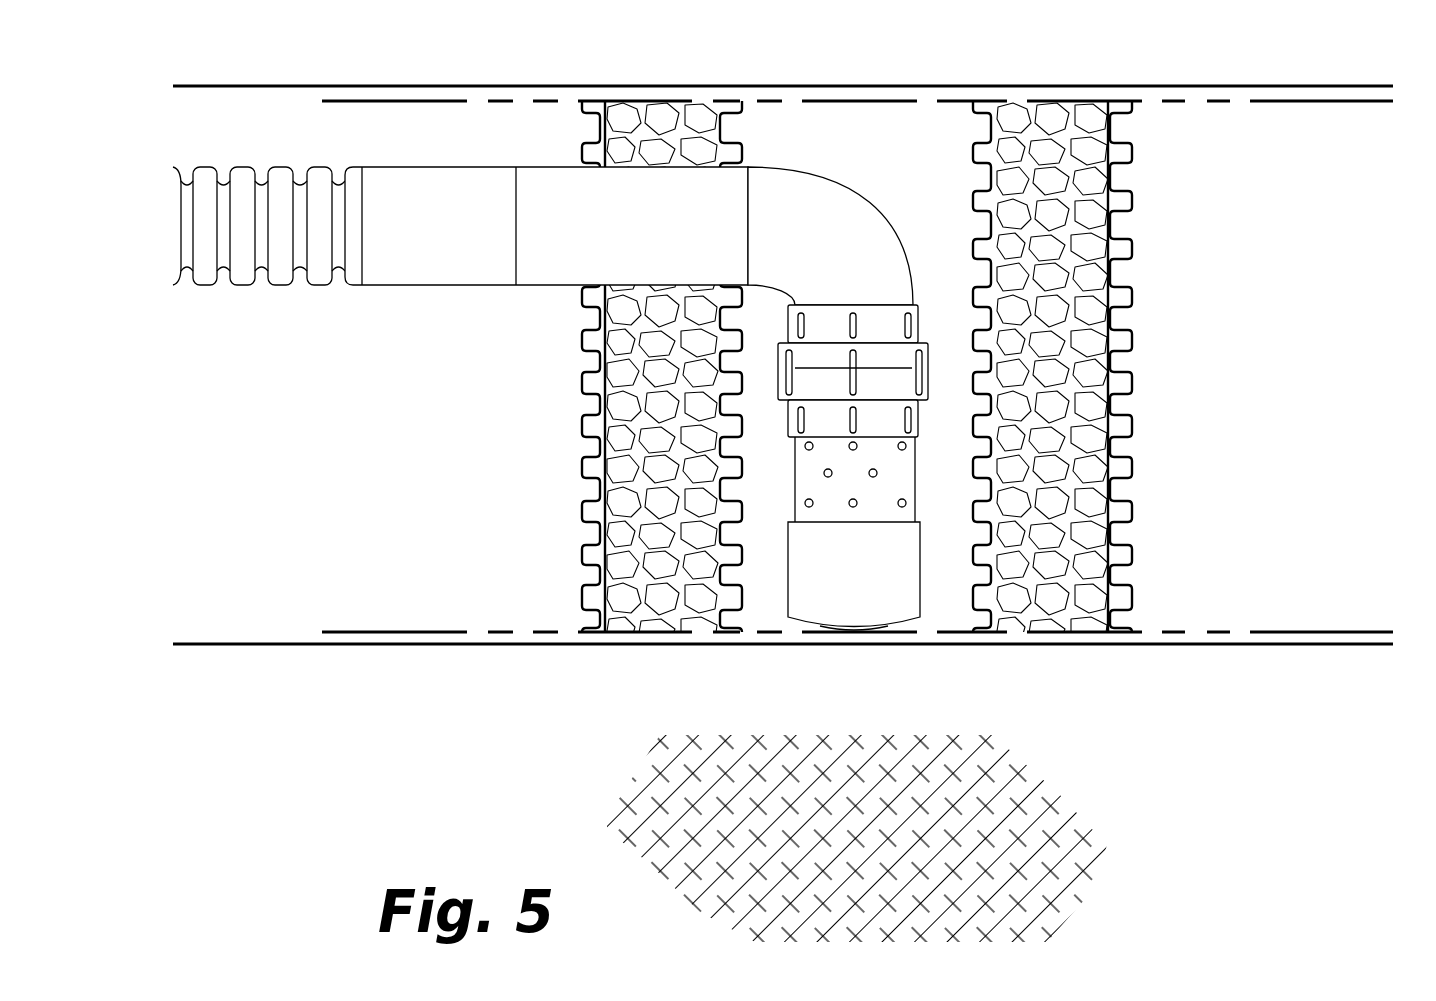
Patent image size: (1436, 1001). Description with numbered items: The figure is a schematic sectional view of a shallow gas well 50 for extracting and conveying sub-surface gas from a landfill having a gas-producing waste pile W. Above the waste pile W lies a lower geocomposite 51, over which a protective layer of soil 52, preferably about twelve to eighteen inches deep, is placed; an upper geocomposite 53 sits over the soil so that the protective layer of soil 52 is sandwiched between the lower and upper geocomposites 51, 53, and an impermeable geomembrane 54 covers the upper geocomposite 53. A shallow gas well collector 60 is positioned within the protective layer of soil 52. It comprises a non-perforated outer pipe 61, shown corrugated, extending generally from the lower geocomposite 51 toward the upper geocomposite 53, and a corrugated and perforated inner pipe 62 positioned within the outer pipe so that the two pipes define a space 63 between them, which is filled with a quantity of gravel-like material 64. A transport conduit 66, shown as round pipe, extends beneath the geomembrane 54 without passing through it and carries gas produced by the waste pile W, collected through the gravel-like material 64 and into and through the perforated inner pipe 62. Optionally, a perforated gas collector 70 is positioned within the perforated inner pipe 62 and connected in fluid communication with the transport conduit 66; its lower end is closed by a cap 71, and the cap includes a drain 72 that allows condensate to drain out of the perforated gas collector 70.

The shallow gas well 50 is at (1168, 777).
The lower geocomposite 51 is at (1212, 628).
The protective layer of soil 52 is at (270, 546).
The upper geocomposite 53 is at (1302, 103).
The impermeable geomembrane 54 is at (1088, 86).
The shallow gas well collector 60 is at (790, 664).
The non-perforated outer pipe 61 is at (1135, 355).
The corrugated and perforated inner pipe 62 is at (715, 342).
The space 63 is at (640, 468).
The gravel-like material 64 is at (637, 607).
The transport conduit 66 is at (278, 290).
The perforated gas collector 70 is at (895, 463).
The cap 71 is at (881, 583).
The drain 72 is at (858, 640).
The gas-producing waste pile W is at (863, 838).